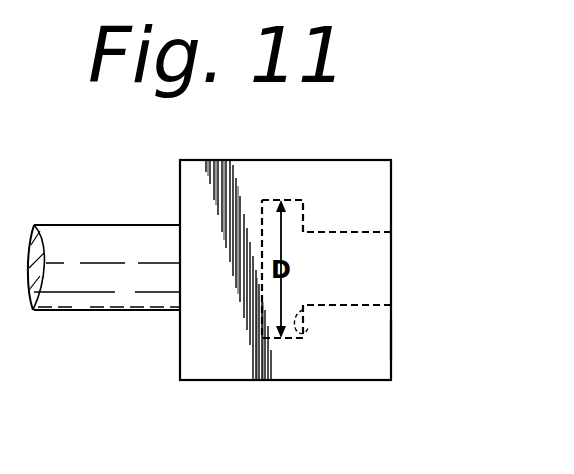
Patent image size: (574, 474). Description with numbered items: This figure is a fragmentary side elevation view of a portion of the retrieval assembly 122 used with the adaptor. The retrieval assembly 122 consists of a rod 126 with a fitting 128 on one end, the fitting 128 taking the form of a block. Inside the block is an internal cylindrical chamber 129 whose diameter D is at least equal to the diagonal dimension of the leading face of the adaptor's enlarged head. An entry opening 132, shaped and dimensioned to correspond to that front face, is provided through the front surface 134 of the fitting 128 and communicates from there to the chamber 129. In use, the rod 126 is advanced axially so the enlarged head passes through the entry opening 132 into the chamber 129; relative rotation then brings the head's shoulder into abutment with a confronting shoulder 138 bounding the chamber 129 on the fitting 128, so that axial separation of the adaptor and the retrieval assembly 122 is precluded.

The retrieval assembly 122 is at (319, 315).
The rod 126 is at (118, 312).
The fitting 128 is at (391, 202).
The cylindrical chamber 129 is at (296, 212).
The entry opening 132 is at (391, 272).
The front surface 134 is at (391, 337).
The confronting shoulder 138 is at (300, 332).